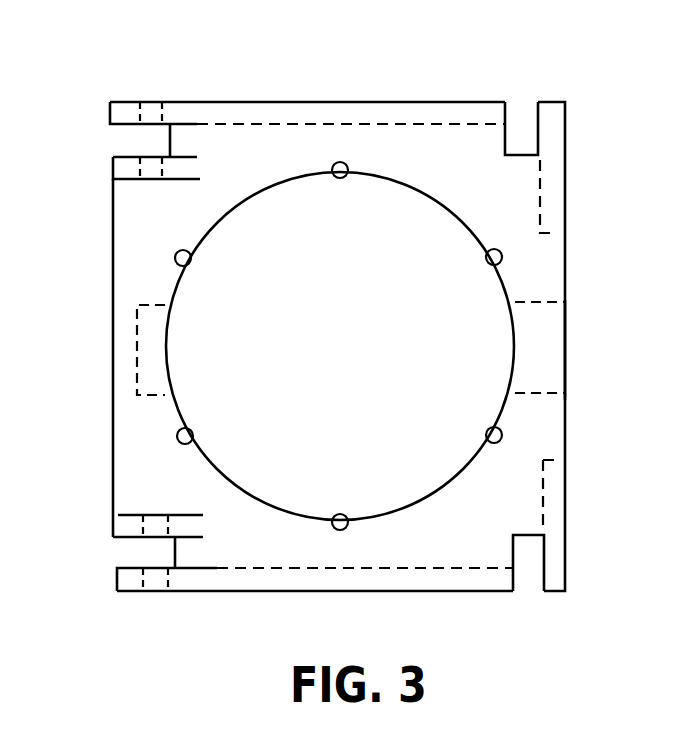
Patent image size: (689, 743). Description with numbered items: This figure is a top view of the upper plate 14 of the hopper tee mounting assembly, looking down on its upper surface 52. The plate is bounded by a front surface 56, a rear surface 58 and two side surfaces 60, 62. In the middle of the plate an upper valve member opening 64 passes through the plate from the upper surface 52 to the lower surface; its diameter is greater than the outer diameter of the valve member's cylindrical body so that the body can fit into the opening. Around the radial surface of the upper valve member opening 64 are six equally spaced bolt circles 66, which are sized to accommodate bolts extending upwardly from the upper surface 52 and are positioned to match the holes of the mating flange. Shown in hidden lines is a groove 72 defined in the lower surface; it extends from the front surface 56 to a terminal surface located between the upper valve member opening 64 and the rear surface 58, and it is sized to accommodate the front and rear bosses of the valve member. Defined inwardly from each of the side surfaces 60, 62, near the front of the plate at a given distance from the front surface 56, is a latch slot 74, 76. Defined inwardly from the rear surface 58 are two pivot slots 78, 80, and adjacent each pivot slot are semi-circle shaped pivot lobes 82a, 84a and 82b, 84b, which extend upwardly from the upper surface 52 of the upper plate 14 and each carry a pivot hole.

The upper plate 14 is at (586, 106).
The upper surface 52 is at (553, 268).
The front surface 56 is at (565, 422).
The rear surface 58 is at (113, 452).
The side surface 60 is at (410, 102).
The side surface 62 is at (375, 592).
The upper valve member opening 64 is at (340, 346).
The bolt circles 66 is at (340, 158).
The groove 72 is at (137, 350).
The latch slot 74 is at (524, 128).
The latch slot 76 is at (530, 565).
The pivot slot 78 is at (138, 141).
The pivot slot 80 is at (135, 557).
The pivot lobe 82a is at (115, 102).
The pivot lobe 82b is at (122, 592).
The pivot lobe 84a is at (128, 181).
The pivot lobe 84b is at (120, 514).